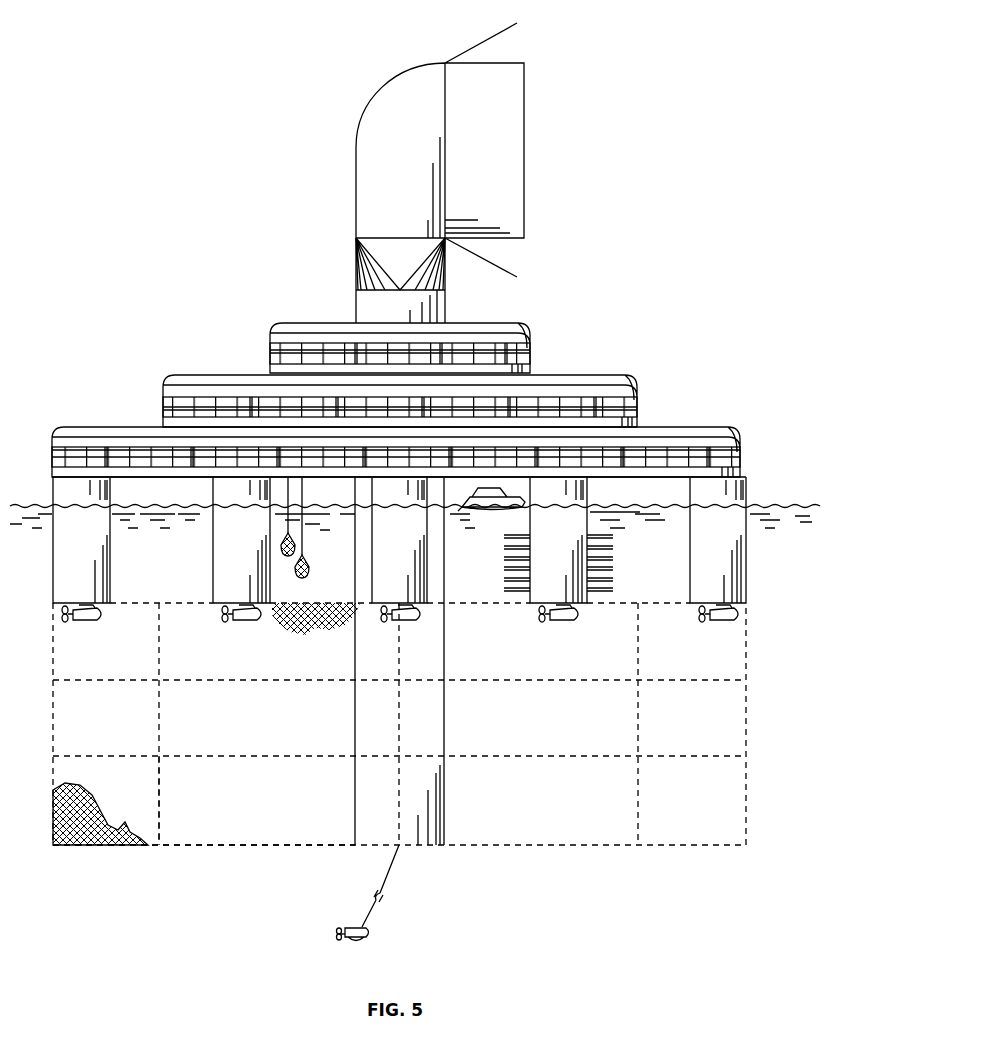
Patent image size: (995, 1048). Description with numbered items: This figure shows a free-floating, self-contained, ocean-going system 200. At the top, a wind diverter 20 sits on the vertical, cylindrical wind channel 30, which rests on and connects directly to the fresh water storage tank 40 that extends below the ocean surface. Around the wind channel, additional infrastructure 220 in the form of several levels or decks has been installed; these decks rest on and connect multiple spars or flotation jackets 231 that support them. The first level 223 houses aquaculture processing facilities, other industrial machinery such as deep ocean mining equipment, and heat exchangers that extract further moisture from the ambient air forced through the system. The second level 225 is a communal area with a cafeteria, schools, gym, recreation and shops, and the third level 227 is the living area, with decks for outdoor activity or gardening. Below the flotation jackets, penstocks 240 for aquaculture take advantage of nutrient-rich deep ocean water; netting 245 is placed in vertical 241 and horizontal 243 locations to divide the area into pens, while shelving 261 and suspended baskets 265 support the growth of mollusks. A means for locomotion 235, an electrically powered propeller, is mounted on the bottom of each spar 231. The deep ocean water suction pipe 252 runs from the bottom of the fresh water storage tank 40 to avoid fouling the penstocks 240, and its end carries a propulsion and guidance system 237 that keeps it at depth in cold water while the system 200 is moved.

The independent ocean-going system 200 is at (117, 183).
The wind diverter 20 is at (340, 141).
The wind channel 30 is at (348, 306).
The additional infrastructure 220 is at (138, 374).
The third level 227 is at (475, 324).
The second level 225 is at (583, 375).
The first level 223 is at (680, 428).
The spars or flotation jackets 231 is at (746, 572).
The shelving 261 is at (613, 538).
The suspended baskets 265 is at (306, 565).
The means for locomotion 235 is at (566, 622).
The penstocks 240 is at (618, 868).
The horizontal netting location 243 is at (217, 682).
The vertical netting location 241 is at (160, 806).
The netting 245 is at (86, 790).
The fresh water storage tank 40 is at (455, 822).
The DOW suction pipe 252 is at (388, 880).
The propulsion and guidance system 237 is at (350, 927).